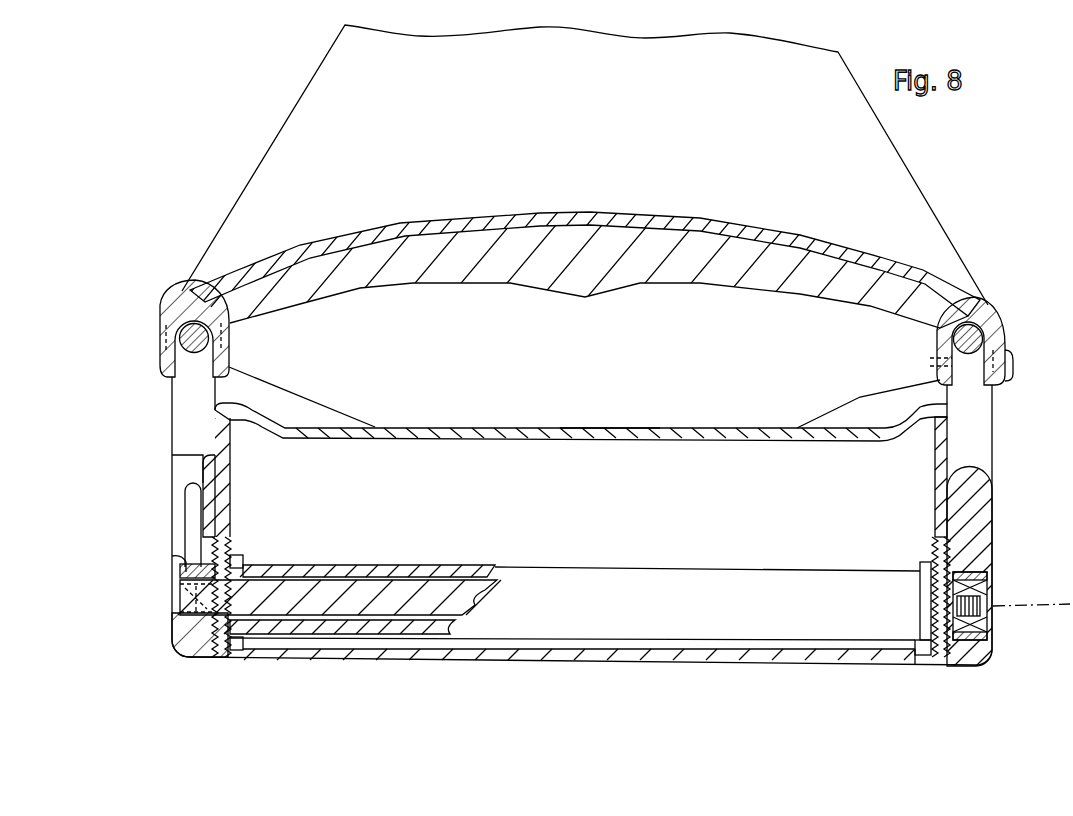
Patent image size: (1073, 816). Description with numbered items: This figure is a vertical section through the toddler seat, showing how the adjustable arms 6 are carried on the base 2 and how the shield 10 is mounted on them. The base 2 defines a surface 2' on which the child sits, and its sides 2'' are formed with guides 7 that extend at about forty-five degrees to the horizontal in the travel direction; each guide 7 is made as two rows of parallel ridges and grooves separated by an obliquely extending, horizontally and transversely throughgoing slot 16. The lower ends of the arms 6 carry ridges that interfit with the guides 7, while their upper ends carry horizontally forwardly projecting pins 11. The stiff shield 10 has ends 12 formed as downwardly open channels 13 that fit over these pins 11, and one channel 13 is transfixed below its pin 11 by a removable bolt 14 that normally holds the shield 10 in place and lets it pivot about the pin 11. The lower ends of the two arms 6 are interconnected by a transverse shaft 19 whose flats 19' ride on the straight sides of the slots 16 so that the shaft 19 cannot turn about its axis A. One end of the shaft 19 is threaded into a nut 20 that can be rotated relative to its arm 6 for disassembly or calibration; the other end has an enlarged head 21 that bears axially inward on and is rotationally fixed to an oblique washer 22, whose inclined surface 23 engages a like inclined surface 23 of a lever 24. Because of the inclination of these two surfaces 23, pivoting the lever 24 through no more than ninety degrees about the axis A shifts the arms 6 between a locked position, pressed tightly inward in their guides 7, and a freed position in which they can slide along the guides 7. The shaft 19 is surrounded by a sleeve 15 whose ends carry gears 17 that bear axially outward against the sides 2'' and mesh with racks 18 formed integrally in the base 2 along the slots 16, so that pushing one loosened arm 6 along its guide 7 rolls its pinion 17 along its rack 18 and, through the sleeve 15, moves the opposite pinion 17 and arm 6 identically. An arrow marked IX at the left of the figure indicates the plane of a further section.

The shield 10 is at (616, 128).
The ends of the shield 12 is at (185, 305).
The pins 11 is at (180, 337).
The channels 13 is at (162, 352).
The bolts 14 is at (982, 388).
The arms 6 is at (180, 432).
The base 2 is at (581, 442).
The surface 2' is at (610, 454).
The sides of the base 2'' is at (575, 486).
The lever 24 is at (185, 503).
The guides 7 is at (228, 547).
The oblique washer 22 is at (173, 560).
The inclined surface 23 is at (180, 598).
The enlarged head 21 is at (176, 616).
The shaft 19 is at (339, 576).
The flats 19' is at (359, 584).
The sleeve 15 is at (435, 572).
The gears 17 is at (244, 561).
The slot 16 is at (218, 655).
The racks 18 is at (237, 650).
The nut 20 is at (990, 592).
The shaft axis A is at (1062, 605).
The section line IX is at (92, 548).